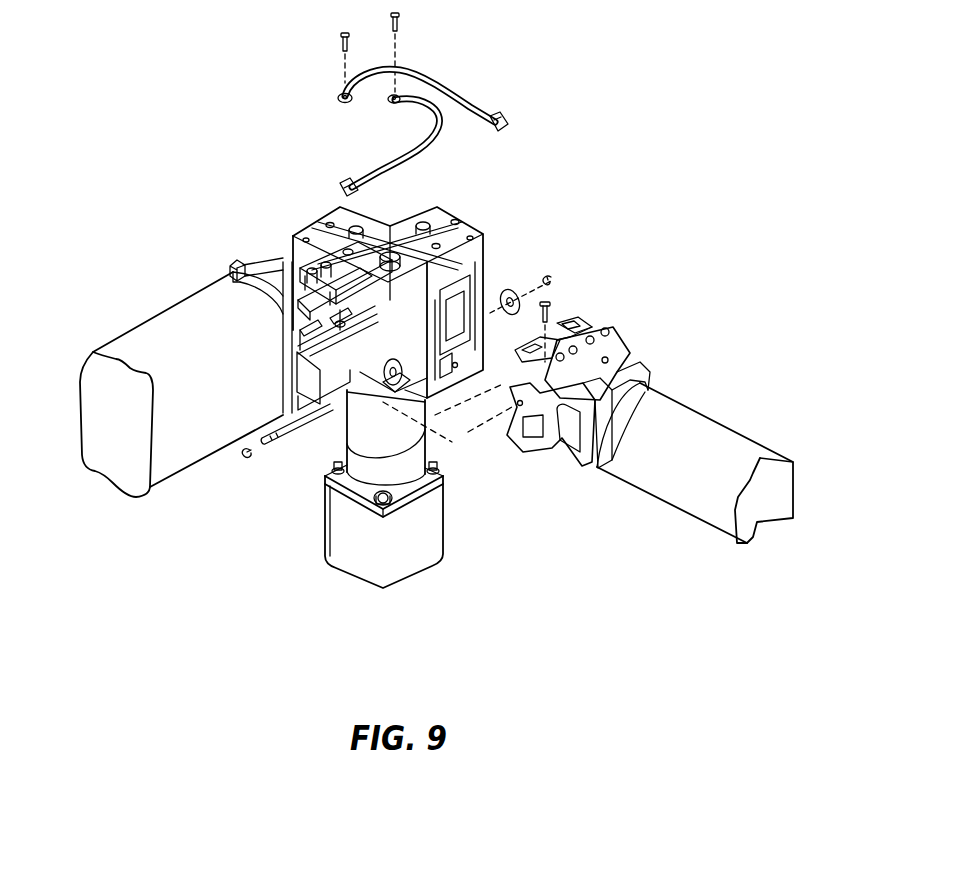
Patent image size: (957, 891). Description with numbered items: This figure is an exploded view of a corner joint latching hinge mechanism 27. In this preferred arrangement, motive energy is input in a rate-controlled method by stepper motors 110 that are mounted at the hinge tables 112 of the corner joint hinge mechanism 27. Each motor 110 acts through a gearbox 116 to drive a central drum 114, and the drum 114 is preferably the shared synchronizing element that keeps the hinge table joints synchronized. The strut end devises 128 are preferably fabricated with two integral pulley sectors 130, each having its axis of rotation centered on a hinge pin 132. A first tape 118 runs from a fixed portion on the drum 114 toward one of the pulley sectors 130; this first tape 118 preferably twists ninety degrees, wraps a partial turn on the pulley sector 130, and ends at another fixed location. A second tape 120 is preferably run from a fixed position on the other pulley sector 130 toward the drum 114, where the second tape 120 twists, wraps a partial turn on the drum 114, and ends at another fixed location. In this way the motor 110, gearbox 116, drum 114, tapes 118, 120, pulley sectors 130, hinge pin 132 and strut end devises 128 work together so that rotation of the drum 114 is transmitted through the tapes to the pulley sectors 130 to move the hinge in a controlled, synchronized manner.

The corner joint hinge mechanism 27 is at (598, 188).
The stepper motor 110 is at (415, 548).
The hinge table 112 is at (458, 217).
The central drum 114 is at (310, 221).
The gearbox 116 is at (355, 426).
The first tape 118 is at (447, 88).
The second tape 120 is at (397, 166).
The strut end devise 128 is at (178, 318).
The pulley sector 130 is at (533, 445).
The hinge pin 132 is at (270, 444).